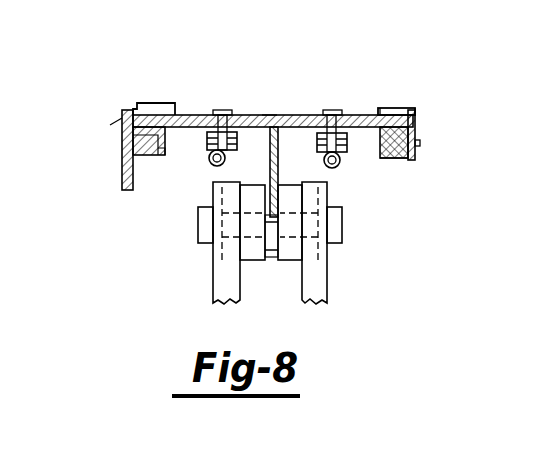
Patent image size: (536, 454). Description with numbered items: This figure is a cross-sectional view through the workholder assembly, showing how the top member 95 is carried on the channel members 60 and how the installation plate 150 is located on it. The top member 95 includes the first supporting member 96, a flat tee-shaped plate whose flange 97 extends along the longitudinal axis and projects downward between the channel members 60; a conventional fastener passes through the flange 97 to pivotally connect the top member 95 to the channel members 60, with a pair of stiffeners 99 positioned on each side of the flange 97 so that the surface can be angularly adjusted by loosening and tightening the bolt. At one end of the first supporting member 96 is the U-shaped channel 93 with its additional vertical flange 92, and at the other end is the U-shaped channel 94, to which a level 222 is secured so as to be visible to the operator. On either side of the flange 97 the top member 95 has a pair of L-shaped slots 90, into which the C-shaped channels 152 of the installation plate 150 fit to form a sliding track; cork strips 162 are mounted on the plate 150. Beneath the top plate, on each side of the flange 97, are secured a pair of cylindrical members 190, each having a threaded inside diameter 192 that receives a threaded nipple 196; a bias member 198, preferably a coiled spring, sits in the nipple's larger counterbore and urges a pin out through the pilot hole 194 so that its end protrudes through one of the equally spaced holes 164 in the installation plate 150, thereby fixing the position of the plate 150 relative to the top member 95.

The channel members 60 is at (222, 290).
The L-shaped slots 90 is at (122, 176).
The vertical flange 92 is at (122, 154).
The U-shaped channel 93 is at (168, 157).
The U-shaped channel 94 is at (428, 112).
The top member 95 is at (317, 115).
The first supporting member 96 is at (262, 115).
The flange 97 is at (283, 257).
The stiffeners 99 is at (248, 182).
The installation plate 150 is at (277, 115).
The C-shaped channels 152 is at (122, 122).
The cork strips 162 is at (165, 103).
The holes 164 is at (237, 115).
The cylindrical members 190 is at (205, 150).
The threaded inside diameter 192 is at (226, 159).
The pilot hole 194 is at (373, 148).
The threaded nipple 196 is at (218, 80).
The bias member 198 is at (324, 160).
The level 222 is at (389, 108).